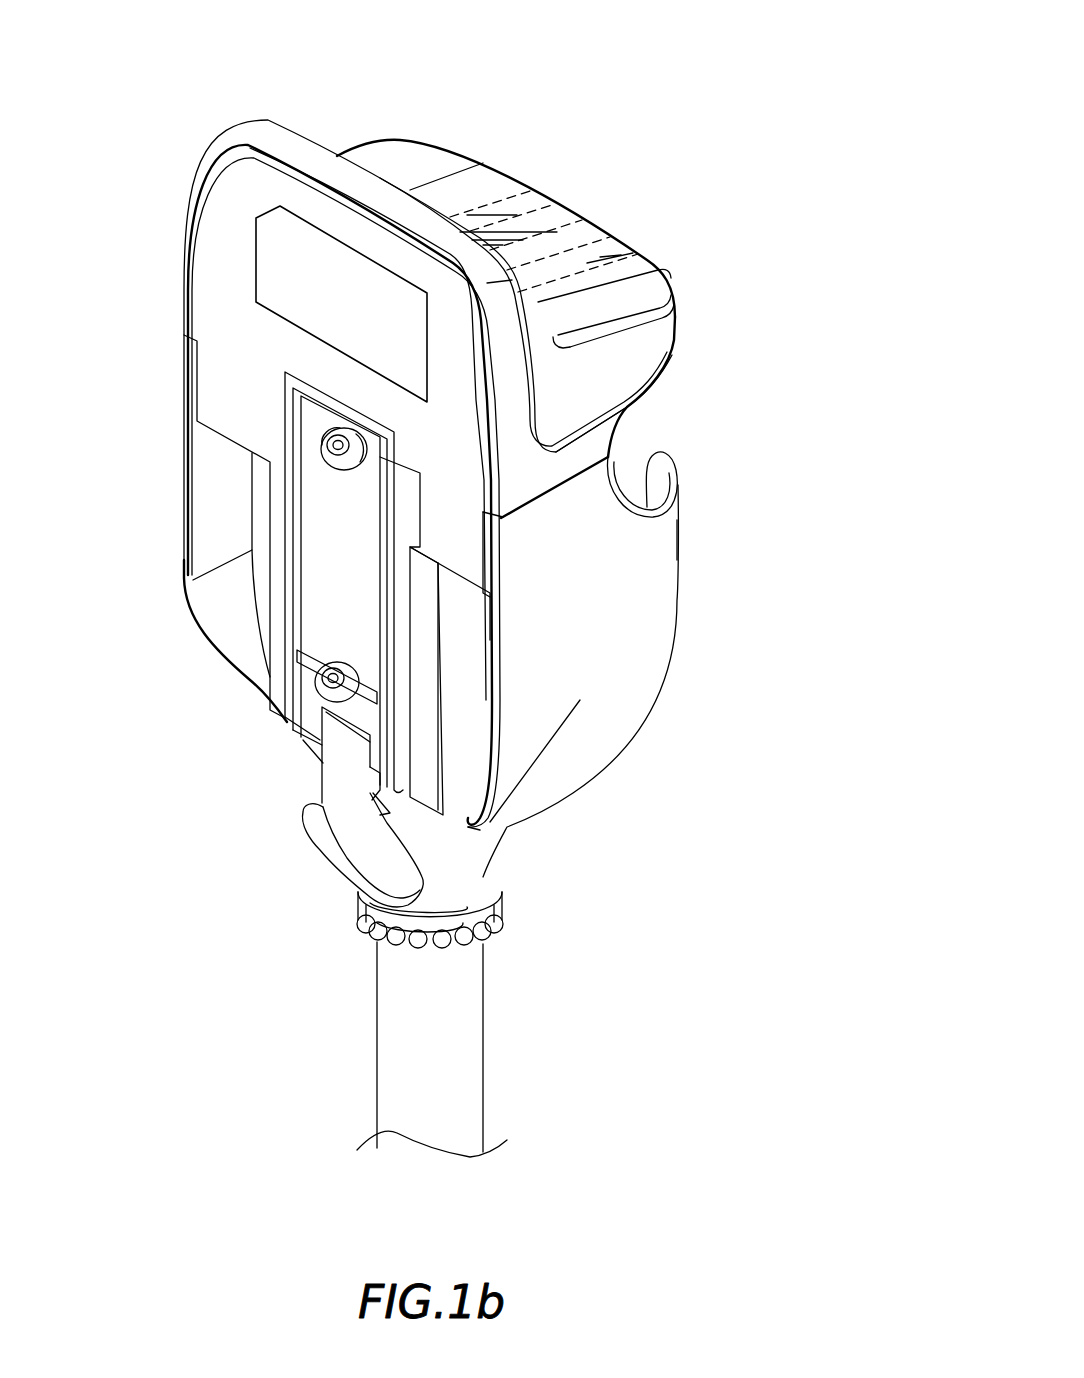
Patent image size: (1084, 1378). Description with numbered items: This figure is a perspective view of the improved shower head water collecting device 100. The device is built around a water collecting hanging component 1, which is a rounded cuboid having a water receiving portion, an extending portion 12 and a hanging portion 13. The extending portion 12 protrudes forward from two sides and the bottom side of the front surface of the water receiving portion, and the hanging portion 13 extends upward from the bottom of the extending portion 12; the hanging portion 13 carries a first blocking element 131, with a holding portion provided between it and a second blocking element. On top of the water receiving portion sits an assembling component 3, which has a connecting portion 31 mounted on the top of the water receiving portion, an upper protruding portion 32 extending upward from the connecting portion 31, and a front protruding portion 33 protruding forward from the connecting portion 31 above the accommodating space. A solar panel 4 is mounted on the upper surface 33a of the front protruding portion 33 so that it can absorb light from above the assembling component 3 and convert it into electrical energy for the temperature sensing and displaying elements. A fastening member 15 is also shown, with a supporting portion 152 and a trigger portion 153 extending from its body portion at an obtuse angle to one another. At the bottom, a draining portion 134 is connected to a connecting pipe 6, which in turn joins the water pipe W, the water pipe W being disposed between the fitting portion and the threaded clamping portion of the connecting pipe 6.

The improved shower head water collecting device 100 is at (750, 82).
The water collecting hanging component 1 is at (650, 663).
The assembling component 3 is at (489, 318).
The solar panel 4 is at (527, 203).
The connecting pipe 6 is at (492, 911).
The extending portion 12 is at (560, 772).
The hanging portion 13 is at (657, 477).
The fastening member 15 is at (327, 547).
The connecting portion 31 is at (653, 430).
The upper protruding portion 32 is at (580, 230).
The front protruding portion 33 is at (597, 357).
The upper surface 33a is at (416, 158).
The first blocking element 131 is at (646, 598).
The draining portion 134 is at (480, 852).
The supporting portion 152 is at (347, 765).
The trigger portion 153 is at (335, 841).
The water pipe W is at (468, 1040).